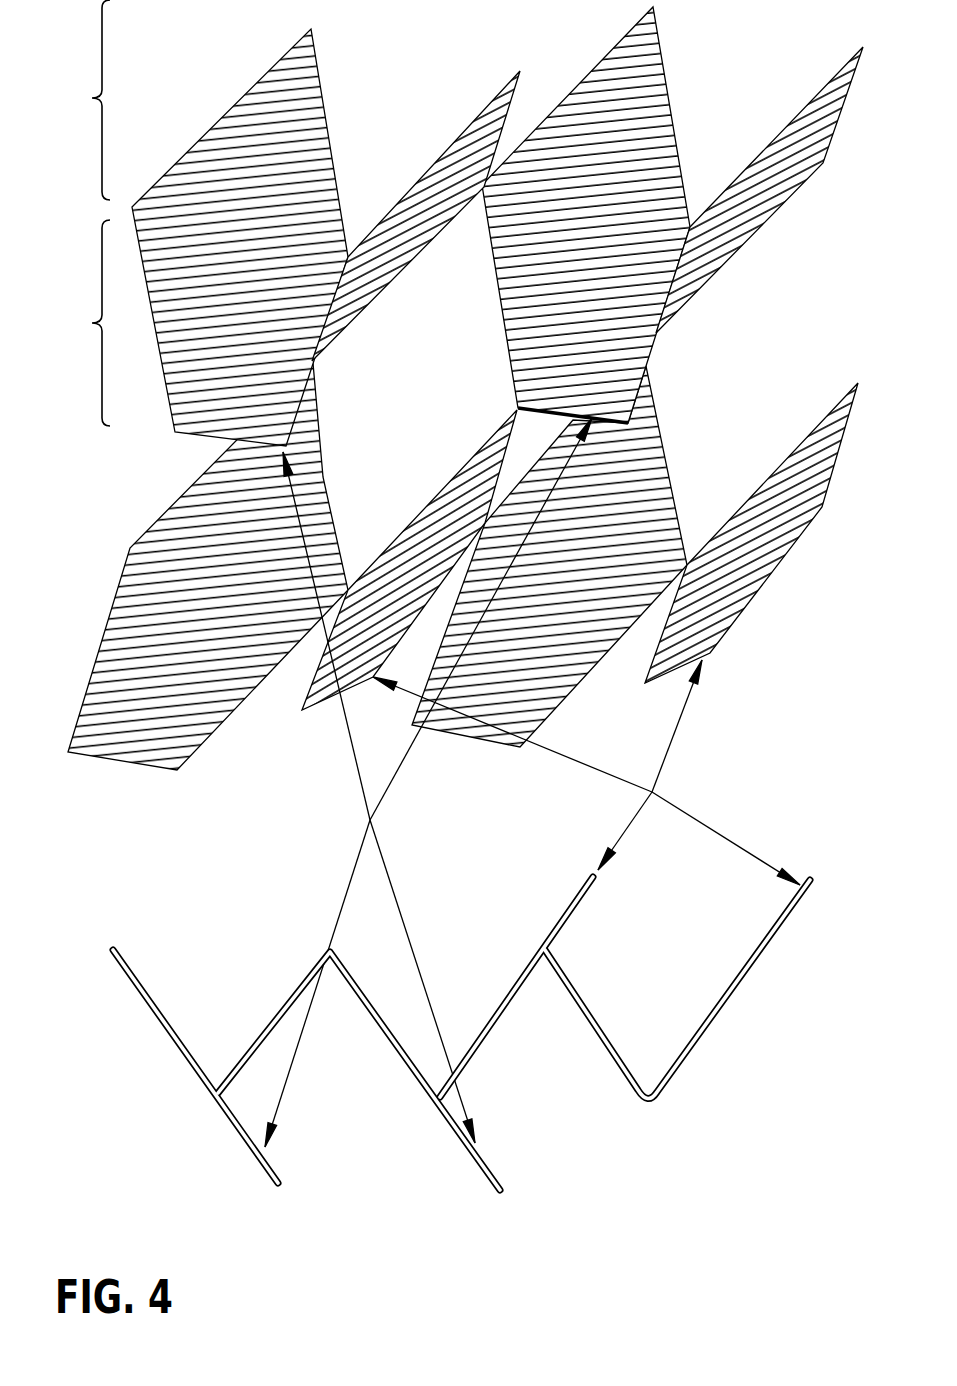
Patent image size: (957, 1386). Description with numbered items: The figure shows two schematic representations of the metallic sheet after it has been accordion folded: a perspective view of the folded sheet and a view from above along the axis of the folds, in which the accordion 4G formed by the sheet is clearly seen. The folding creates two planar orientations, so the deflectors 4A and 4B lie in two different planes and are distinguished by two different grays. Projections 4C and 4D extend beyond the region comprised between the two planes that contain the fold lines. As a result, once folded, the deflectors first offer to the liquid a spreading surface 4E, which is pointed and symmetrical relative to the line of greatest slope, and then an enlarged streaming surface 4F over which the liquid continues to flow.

The deflector of first planar orientation 4A is at (268, 214).
The deflector of second planar orientation 4B is at (423, 220).
The projection 4C is at (370, 820).
The projection 4D is at (652, 792).
The spreading surface 4E is at (81, 100).
The streaming surface 4F is at (81, 323).
The accordion 4G is at (818, 1208).